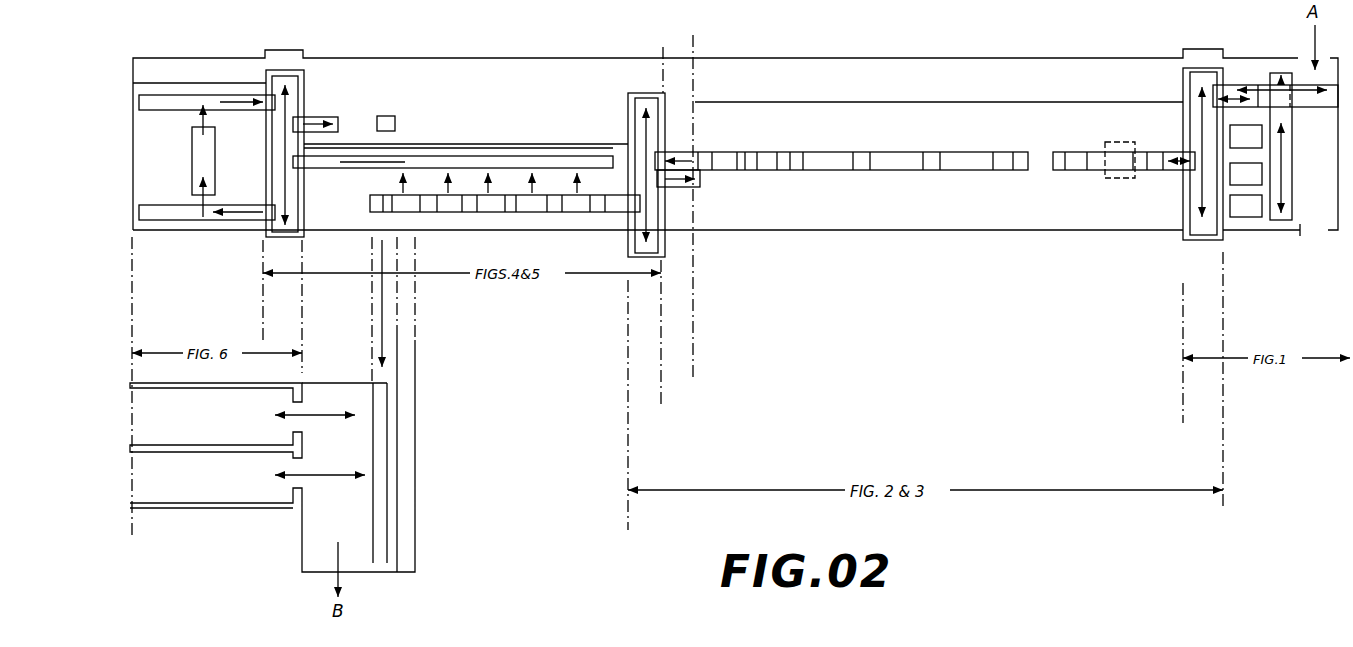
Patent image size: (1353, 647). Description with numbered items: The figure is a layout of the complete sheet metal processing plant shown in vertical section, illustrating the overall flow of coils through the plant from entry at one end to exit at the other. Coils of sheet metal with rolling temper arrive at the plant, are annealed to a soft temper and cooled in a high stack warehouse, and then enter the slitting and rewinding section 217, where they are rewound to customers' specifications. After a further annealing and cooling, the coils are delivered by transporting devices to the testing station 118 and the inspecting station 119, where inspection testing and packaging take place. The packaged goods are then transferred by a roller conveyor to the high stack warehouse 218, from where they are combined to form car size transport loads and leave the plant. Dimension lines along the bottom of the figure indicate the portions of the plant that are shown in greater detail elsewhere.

The testing station 118 is at (391, 102).
The inspecting station 119 is at (453, 118).
The slitting and rewinding section 217 is at (505, 140).
The high stack warehouse 218 is at (272, 451).